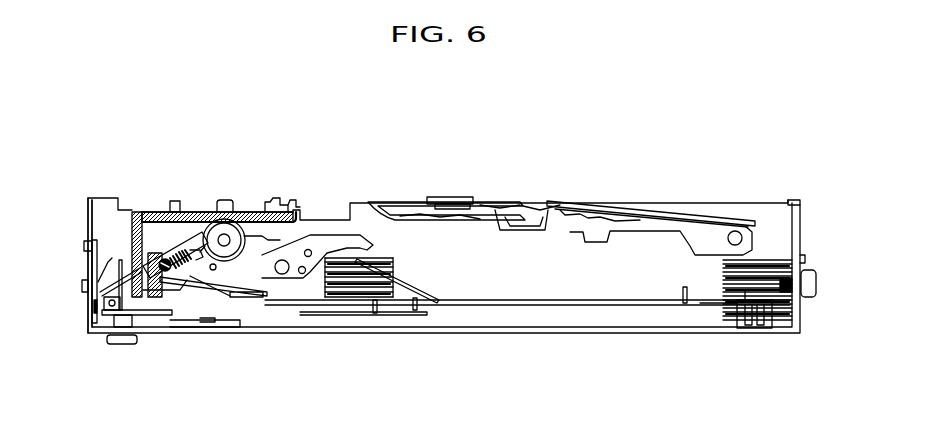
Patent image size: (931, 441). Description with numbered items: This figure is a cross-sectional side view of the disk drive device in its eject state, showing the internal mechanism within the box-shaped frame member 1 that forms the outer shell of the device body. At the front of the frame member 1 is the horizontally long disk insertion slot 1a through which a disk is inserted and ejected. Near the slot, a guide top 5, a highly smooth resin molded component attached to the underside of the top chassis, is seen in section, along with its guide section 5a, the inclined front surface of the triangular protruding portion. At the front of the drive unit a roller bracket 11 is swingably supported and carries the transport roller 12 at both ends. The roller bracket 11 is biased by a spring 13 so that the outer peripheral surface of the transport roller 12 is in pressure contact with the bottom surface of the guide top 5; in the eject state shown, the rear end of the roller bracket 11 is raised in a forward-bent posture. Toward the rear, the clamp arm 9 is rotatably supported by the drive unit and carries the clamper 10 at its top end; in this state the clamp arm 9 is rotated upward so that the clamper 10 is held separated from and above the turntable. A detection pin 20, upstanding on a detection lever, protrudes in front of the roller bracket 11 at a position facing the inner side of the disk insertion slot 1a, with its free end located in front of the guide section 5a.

The frame member 1 is at (790, 200).
The disk insertion slot 1a is at (88, 208).
The guide top 5 is at (190, 212).
The guide section 5a is at (145, 212).
The clamp arm 9 is at (650, 210).
The clamper 10 is at (405, 203).
The roller bracket 11 is at (175, 290).
The transport roller 12 is at (240, 212).
The spring 13 is at (194, 290).
The detection pin 20 is at (84, 247).